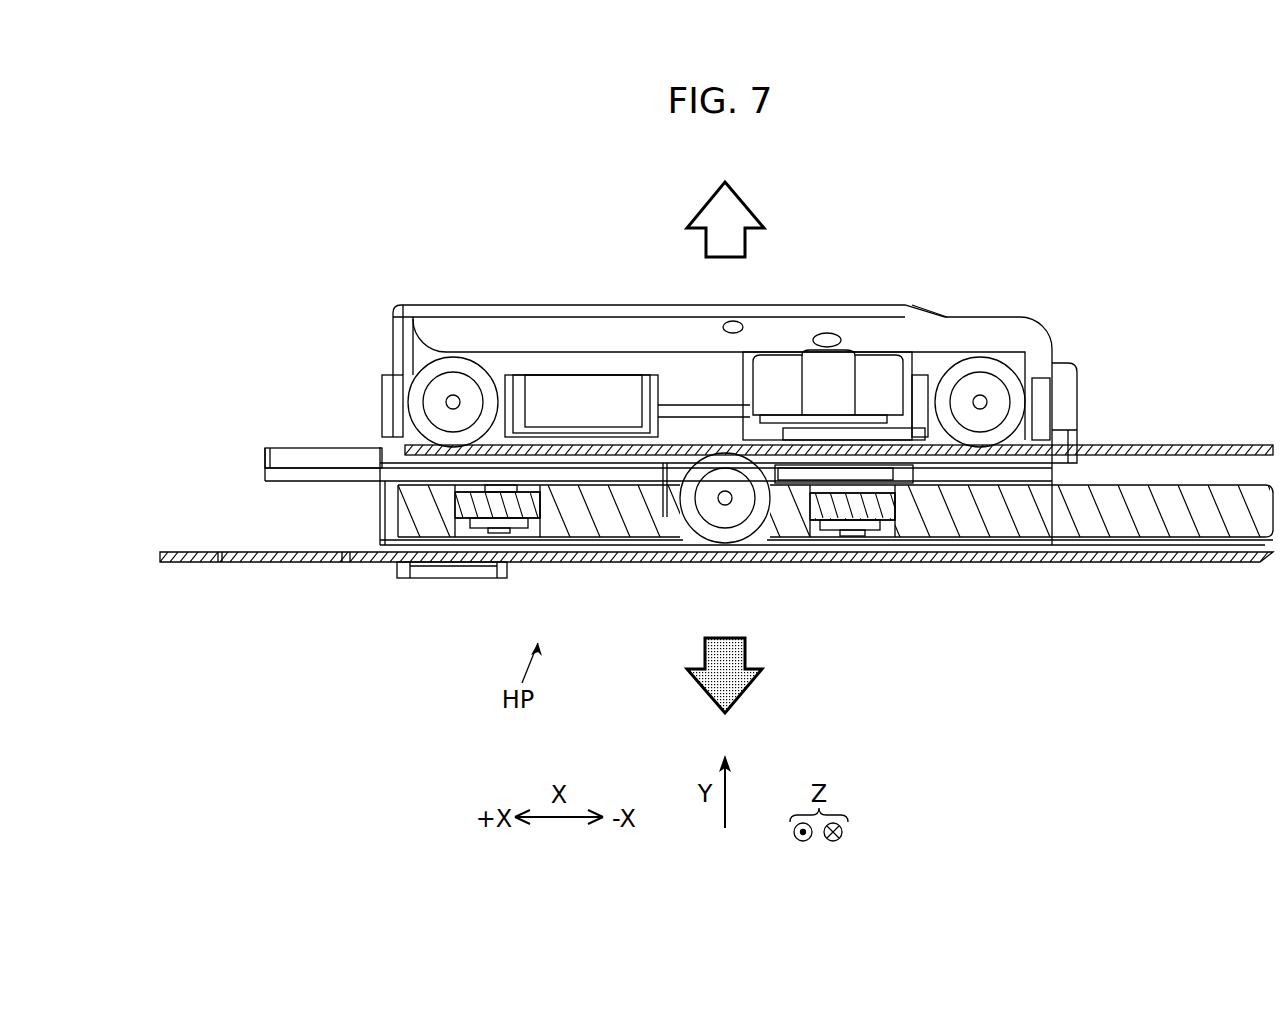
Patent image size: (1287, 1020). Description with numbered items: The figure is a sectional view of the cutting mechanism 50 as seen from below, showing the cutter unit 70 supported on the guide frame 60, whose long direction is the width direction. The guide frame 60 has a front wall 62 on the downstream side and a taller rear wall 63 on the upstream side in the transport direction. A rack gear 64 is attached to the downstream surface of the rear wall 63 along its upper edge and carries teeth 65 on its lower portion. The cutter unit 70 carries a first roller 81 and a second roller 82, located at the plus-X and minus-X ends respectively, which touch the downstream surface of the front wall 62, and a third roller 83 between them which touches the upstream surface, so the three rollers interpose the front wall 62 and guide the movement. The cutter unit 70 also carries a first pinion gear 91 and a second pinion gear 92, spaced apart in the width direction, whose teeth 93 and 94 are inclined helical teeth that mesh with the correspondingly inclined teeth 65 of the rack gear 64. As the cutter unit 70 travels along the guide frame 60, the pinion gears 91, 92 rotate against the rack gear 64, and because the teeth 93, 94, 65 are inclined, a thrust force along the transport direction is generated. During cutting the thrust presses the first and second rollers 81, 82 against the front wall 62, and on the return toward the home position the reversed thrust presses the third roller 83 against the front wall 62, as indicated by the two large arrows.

The cutting mechanism 50 is at (1165, 250).
The guide frame 60 is at (360, 592).
The front wall 62 is at (1167, 445).
The rear wall 63 is at (1180, 563).
The rack gear 64 is at (1237, 485).
The teeth of rack gear 65 is at (1012, 518).
The cutter unit 70 is at (472, 288).
The first roller 81 is at (405, 405).
The second roller 82 is at (1025, 408).
The third roller 83 is at (743, 543).
The first pinion gear 91 is at (892, 522).
The second pinion gear 92 is at (540, 508).
The teeth of first pinion gear 93 is at (827, 512).
The teeth of second pinion gear 94 is at (472, 512).